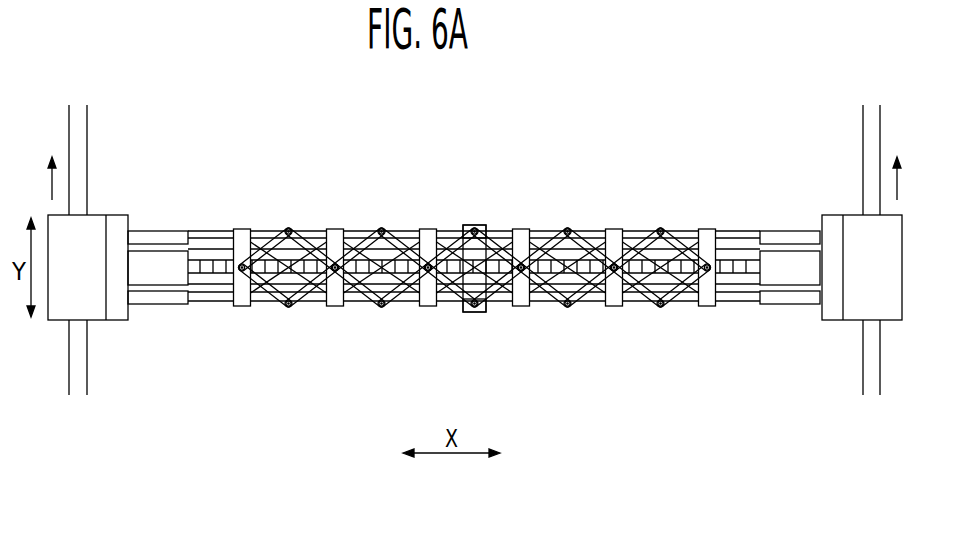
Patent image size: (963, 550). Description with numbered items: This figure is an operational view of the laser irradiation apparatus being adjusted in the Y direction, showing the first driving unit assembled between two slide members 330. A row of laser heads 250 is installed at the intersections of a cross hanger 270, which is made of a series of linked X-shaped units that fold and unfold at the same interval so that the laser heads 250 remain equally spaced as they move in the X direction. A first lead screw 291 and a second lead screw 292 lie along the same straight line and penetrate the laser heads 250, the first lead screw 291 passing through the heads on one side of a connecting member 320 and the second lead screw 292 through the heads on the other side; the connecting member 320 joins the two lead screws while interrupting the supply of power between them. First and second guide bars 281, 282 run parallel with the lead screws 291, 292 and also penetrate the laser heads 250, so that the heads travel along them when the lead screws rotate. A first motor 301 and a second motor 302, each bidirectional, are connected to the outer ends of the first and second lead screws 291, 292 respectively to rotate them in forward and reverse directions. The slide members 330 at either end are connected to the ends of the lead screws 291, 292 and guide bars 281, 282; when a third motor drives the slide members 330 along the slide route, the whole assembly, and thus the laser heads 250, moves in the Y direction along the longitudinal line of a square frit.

The laser head 250 is at (338, 229).
The cross hanger 270 is at (383, 229).
The first guide bar 281 is at (222, 297).
The second guide bar 282 is at (204, 238).
The first lead screw 291 is at (207, 272).
The second lead screw 292 is at (733, 272).
The first motor 301 is at (150, 276).
The second motor 302 is at (794, 276).
The connecting member 320 is at (473, 313).
The slide member 330 is at (852, 215).